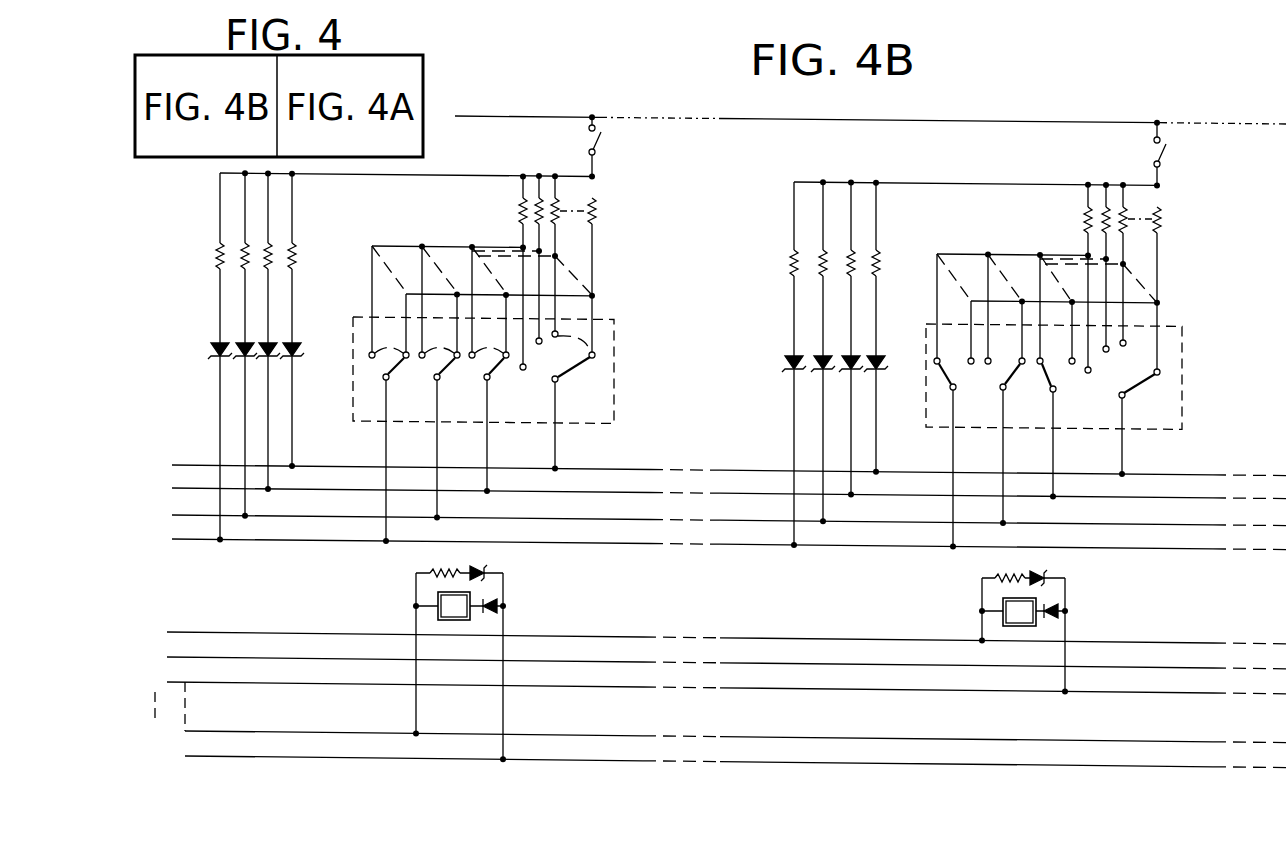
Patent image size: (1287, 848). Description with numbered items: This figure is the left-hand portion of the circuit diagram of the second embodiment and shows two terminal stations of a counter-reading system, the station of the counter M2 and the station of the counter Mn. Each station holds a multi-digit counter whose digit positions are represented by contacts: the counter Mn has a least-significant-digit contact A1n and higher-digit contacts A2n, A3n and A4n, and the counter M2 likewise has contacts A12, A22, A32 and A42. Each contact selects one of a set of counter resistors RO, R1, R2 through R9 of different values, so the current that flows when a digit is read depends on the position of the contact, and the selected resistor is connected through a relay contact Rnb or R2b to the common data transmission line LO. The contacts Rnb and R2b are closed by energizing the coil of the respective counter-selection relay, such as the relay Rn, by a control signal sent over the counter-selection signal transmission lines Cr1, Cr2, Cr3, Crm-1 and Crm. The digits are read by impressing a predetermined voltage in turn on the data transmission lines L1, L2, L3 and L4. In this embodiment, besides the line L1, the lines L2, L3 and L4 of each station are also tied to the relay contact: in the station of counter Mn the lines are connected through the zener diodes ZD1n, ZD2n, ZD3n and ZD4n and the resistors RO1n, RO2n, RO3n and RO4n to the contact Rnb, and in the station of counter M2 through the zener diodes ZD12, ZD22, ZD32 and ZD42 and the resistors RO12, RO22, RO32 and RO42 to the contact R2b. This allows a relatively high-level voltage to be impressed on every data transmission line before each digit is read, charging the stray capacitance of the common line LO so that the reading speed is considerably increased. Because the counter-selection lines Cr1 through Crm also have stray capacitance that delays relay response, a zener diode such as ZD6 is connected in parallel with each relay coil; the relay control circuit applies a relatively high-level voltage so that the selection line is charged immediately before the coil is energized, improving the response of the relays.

The common data transmission line LO is at (856, 115).
The relay contact Rnb is at (602, 146).
The relay contact R2b is at (1166, 155).
The resistor RO4n is at (218, 258).
The resistor RO3n is at (245, 248).
The resistor RO2n is at (270, 248).
The resistor RO1n is at (294, 258).
The zener diode ZD4n is at (212, 348).
The zener diode ZD3n is at (244, 343).
The zener diode ZD2n is at (270, 343).
The zener diode ZD1n is at (293, 343).
The resistor RO42 is at (790, 262).
The resistor RO32 is at (820, 265).
The resistor RO22 is at (853, 265).
The resistor RO12 is at (878, 262).
The zener diode ZD42 is at (790, 362).
The zener diode ZD32 is at (820, 370).
The zener diode ZD22 is at (852, 370).
The zener diode ZD12 is at (877, 356).
The counter resistor RO is at (520, 212).
The counter resistor R1 is at (539, 198).
The counter resistor / relay R2 is at (555, 198).
The counter resistor R9 is at (597, 212).
The counter Mn is at (614, 318).
The counter contact A4n is at (394, 369).
The counter contact A3n is at (445, 369).
The counter contact A2n is at (492, 369).
The counter contact A1n is at (562, 380).
The counter M2 is at (1182, 326).
The counter contact A42 is at (947, 375).
The counter contact A32 is at (1011, 378).
The counter contact A22 is at (1048, 378).
The counter contact A12 is at (1134, 386).
The data transmission line L1 is at (713, 463).
The data transmission line L2 is at (713, 488).
The data transmission line L3 is at (713, 514).
The data transmission line L4 is at (713, 538).
The counter-selection relay Rn is at (459, 665).
The zener diode ZD6 is at (1051, 576).
The counter-selection signal transmission line Cr1 is at (705, 634).
The counter-selection signal transmission line Cr2 is at (705, 659).
The counter-selection signal transmission line Cr3 is at (705, 684).
The counter-selection signal transmission line Crm-1 is at (703, 736).
The counter-selection signal transmission line Crm is at (707, 761).